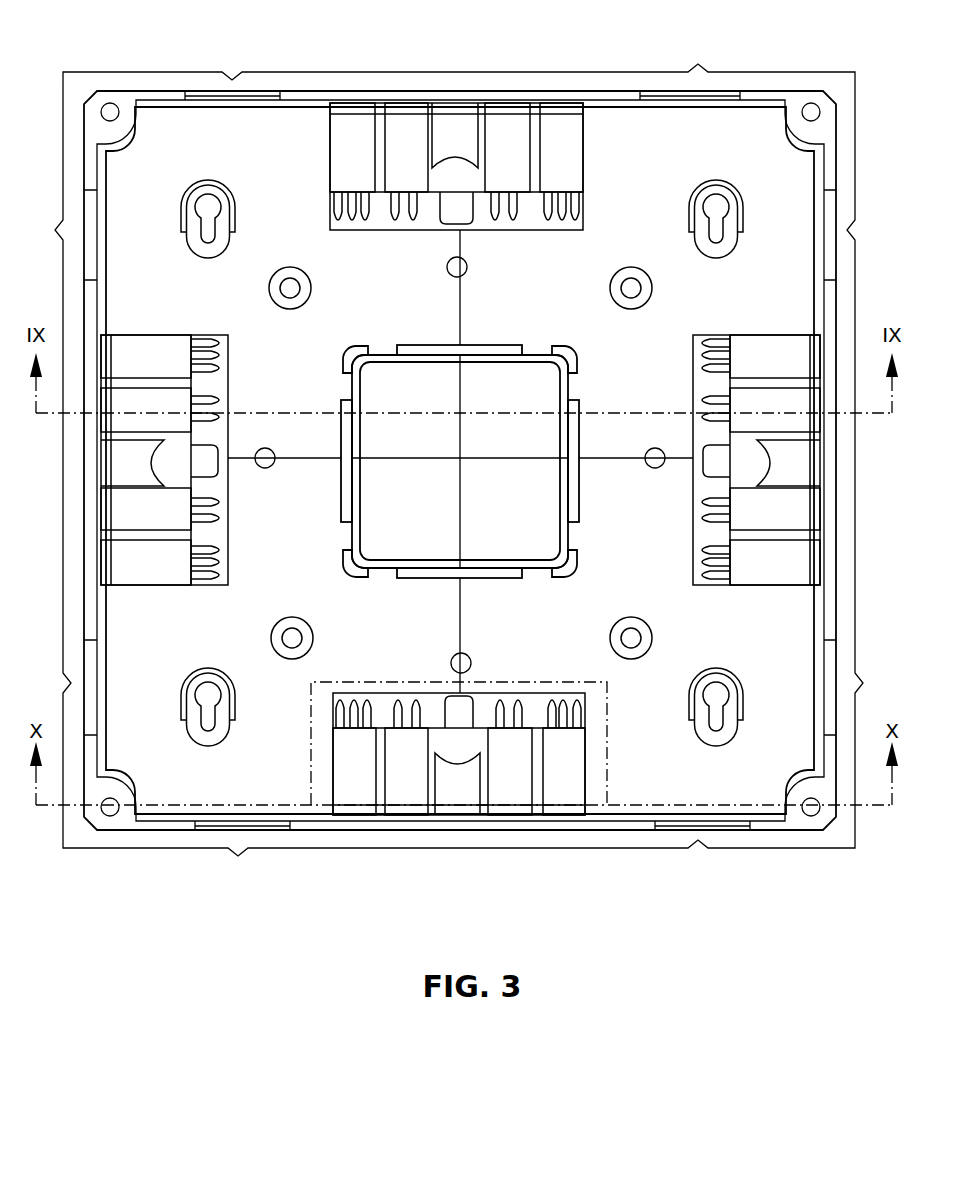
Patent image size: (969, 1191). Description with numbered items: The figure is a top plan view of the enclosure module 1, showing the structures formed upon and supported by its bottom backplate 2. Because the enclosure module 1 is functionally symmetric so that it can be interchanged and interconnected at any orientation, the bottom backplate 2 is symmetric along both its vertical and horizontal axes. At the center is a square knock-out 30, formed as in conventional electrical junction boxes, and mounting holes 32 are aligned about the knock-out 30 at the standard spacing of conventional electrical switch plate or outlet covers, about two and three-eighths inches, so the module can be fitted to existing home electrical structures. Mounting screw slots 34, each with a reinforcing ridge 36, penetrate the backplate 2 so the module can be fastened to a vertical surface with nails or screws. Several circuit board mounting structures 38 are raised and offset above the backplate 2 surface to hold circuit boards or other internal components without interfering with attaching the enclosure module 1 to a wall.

The enclosure module 1 is at (246, 882).
The bottom backplate 2 is at (643, 753).
The square knock-out 30 is at (527, 397).
The mounting holes 32 is at (467, 267).
The mounting screw slots 34 is at (210, 198).
The reinforcing ridge 36 is at (230, 243).
The circuit board mounting structures 38 is at (311, 288).